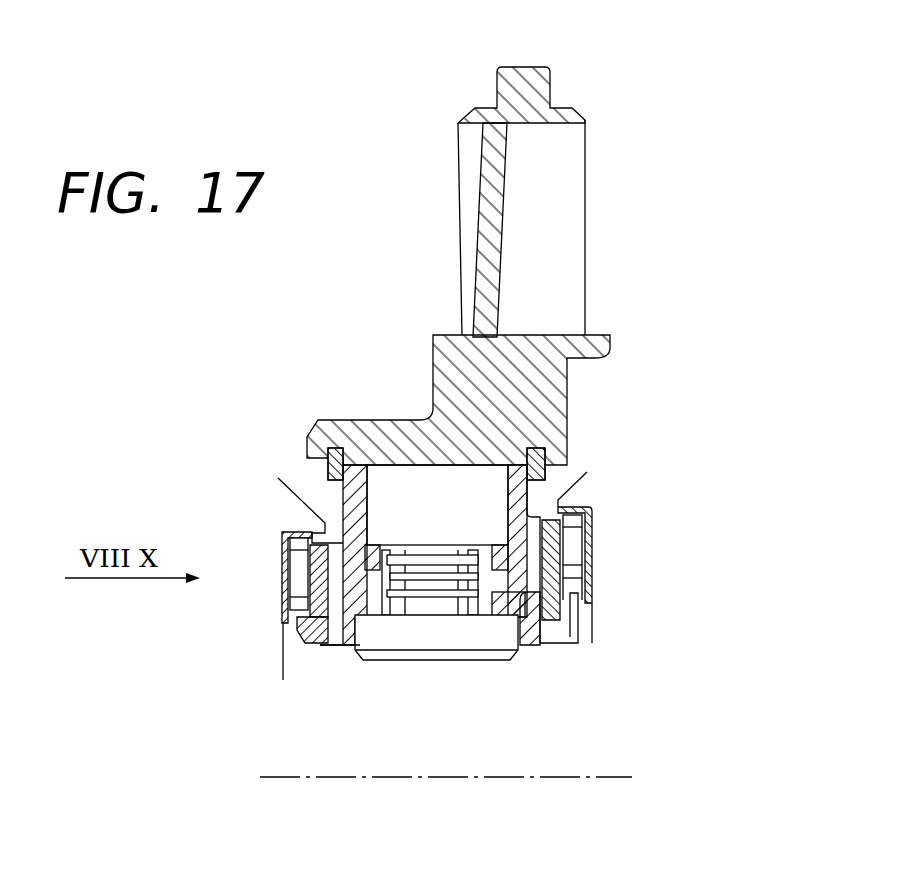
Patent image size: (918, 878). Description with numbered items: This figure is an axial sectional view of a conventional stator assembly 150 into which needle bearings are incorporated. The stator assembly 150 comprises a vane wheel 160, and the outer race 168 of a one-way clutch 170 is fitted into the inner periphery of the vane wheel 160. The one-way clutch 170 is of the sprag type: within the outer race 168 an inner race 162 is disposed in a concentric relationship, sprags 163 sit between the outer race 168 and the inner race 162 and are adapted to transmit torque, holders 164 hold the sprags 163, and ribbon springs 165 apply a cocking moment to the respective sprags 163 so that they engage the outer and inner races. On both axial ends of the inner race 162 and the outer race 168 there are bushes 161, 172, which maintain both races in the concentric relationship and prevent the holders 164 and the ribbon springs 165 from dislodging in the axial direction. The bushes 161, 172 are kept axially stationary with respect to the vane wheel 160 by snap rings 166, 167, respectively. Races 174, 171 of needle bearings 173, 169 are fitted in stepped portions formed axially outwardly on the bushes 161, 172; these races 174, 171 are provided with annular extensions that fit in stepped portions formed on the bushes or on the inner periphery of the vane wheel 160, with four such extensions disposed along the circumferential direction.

The stator assembly 150 is at (624, 102).
The vane wheel 160 is at (572, 226).
The bush 161 is at (343, 495).
The inner race 162 is at (478, 648).
The sprags 163 is at (447, 612).
The holders 164 is at (520, 649).
The ribbon springs 165 is at (365, 582).
The snap ring 166 is at (327, 472).
The snap ring 167 is at (548, 472).
The outer race 168 is at (450, 478).
The needle bearing 169 is at (586, 499).
The one-way clutch 170 is at (347, 658).
The race 171 is at (577, 542).
The bush 172 is at (578, 570).
The needle bearing 173 is at (293, 638).
The race 174 is at (284, 574).